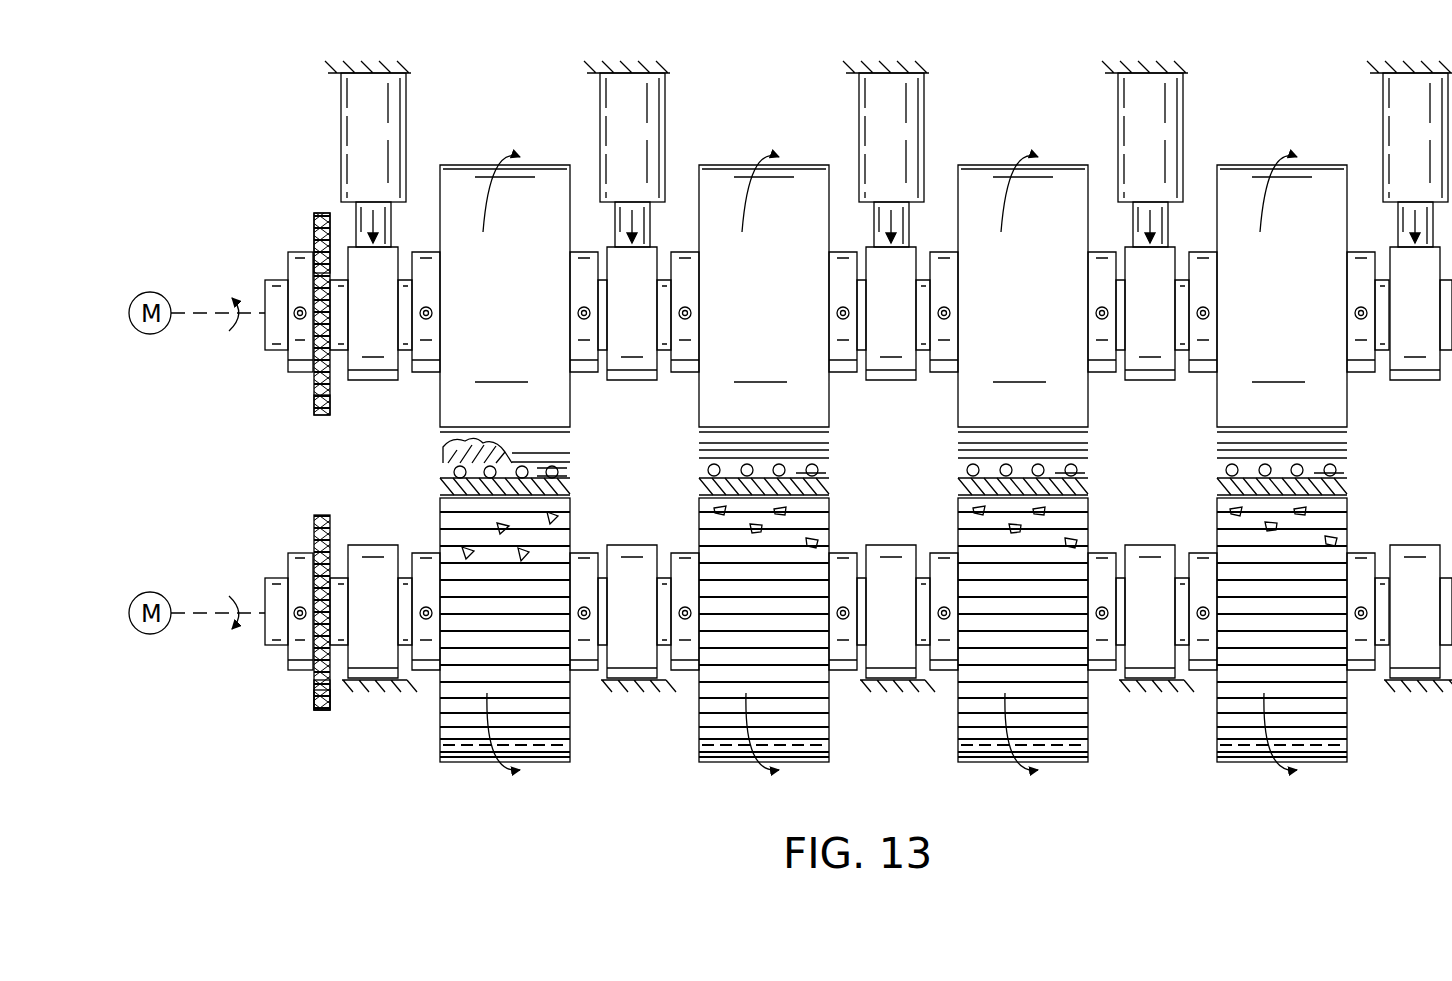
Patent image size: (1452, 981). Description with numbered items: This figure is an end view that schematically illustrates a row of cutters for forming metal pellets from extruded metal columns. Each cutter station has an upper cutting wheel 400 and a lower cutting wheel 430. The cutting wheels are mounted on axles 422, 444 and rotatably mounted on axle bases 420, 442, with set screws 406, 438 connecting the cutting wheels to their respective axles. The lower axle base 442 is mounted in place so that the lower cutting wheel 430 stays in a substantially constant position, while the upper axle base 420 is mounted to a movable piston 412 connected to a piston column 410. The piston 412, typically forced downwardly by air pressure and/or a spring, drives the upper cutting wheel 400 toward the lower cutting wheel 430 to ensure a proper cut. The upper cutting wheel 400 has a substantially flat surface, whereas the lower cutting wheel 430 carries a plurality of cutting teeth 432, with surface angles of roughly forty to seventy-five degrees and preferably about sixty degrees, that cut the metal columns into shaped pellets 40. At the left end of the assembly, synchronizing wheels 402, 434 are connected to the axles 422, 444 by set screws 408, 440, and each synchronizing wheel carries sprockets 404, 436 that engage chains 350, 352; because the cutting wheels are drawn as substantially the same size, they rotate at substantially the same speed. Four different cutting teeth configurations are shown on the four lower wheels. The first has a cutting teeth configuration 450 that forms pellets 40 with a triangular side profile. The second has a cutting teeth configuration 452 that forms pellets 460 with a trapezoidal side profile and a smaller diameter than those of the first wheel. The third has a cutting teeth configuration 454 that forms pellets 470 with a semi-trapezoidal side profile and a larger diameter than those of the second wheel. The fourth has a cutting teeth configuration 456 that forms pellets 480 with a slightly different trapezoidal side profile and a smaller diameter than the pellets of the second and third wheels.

The pellet 40 is at (532, 550).
The chain 350 is at (313, 410).
The chain 352 is at (317, 515).
The cutting wheel 400 is at (546, 162).
The synchronizing wheel 402 is at (313, 233).
The sprockets 404 is at (320, 213).
The set screw 406 is at (582, 311).
The set screw 408 is at (297, 317).
The piston column 410 is at (393, 103).
The movable piston 412 is at (383, 222).
The axle base 420 is at (377, 373).
The axle 422 is at (277, 283).
The cutting wheel 430 is at (460, 765).
The cutting teeth 432 is at (453, 703).
The synchronizing wheel 434 is at (313, 700).
The sprockets 436 is at (328, 710).
The set screw 438 is at (420, 612).
The set screw 440 is at (297, 607).
The axle base 442 is at (368, 555).
The axle 444 is at (278, 642).
The cutting teeth configuration 450 is at (447, 470).
The cutting teeth configuration 452 is at (704, 470).
The cutting teeth configuration 454 is at (963, 470).
The cutting teeth configuration 456 is at (1222, 470).
The pellets 460 is at (785, 511).
The pellets 470 is at (1044, 511).
The pellets 480 is at (1306, 511).